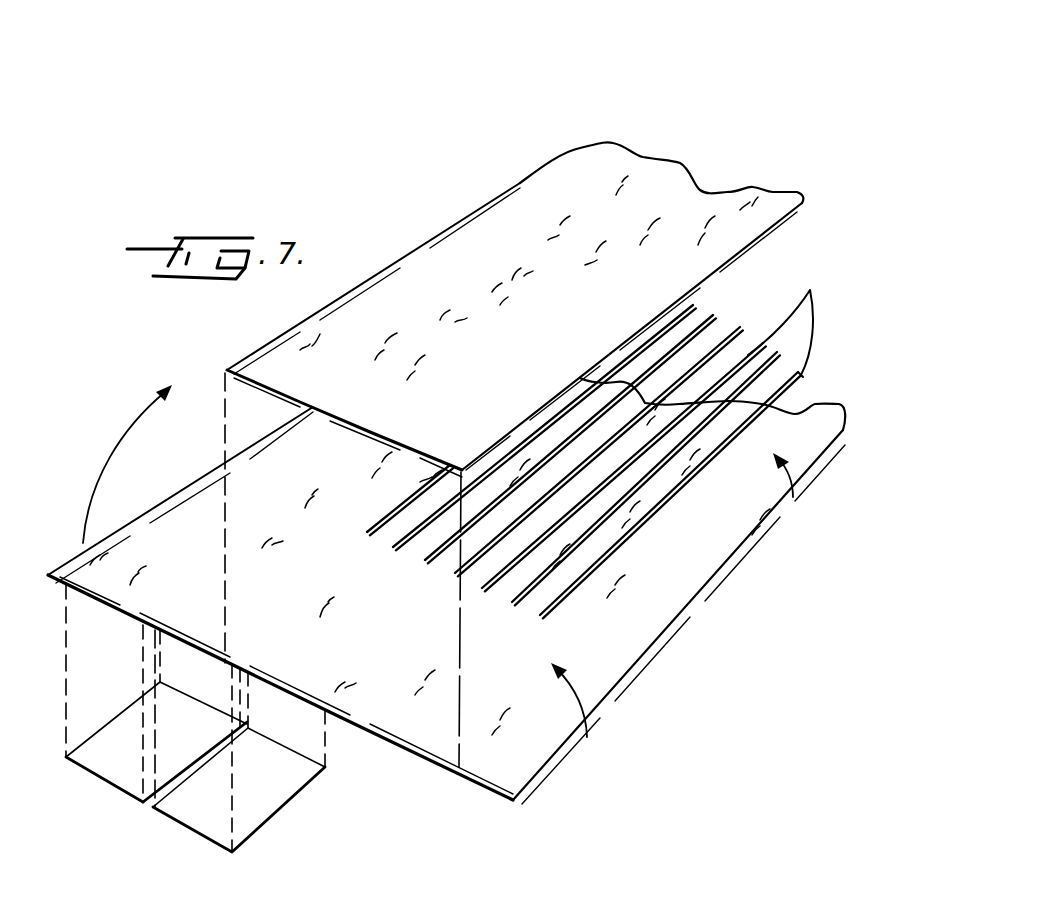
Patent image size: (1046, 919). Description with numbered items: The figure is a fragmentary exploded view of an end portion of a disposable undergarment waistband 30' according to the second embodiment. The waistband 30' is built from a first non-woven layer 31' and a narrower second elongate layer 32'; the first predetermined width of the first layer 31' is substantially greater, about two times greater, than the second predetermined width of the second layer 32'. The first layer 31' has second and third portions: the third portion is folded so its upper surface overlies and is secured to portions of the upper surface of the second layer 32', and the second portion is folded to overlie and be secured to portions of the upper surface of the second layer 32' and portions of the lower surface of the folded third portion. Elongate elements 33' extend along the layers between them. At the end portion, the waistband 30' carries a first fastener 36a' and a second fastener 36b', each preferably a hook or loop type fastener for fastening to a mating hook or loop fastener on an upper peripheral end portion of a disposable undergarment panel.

The disposable undergarment waistband 30' is at (446, 451).
The first layer 31' is at (446, 591).
The second elongate layer 32' is at (515, 309).
The strips 33' is at (598, 440).
The first fastener 36a' is at (153, 718).
The second fastener 36b' is at (239, 763).